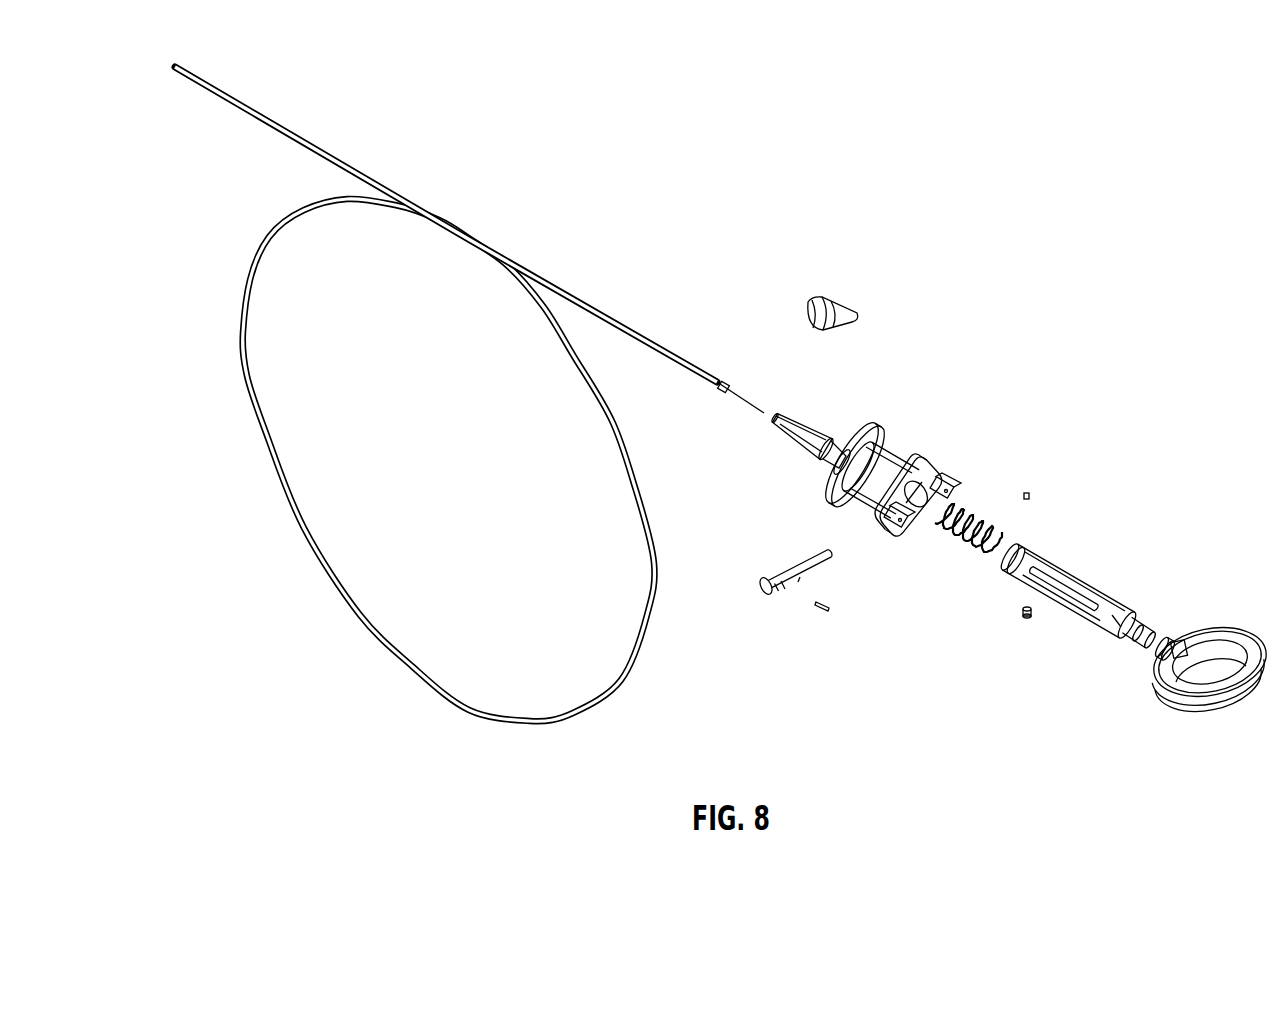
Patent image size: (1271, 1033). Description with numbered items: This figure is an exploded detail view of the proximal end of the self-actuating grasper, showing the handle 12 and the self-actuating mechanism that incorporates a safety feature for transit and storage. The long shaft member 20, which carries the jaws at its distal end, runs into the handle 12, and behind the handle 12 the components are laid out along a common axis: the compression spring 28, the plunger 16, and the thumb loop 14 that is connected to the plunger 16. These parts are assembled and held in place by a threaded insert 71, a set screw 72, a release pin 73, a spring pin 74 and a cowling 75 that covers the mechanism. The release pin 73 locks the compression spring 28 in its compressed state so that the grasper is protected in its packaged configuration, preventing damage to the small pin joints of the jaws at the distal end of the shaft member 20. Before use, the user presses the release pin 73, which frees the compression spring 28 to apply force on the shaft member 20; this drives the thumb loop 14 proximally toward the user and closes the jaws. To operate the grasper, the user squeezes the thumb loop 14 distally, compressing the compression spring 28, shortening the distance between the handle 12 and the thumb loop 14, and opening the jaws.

The handle 12 is at (885, 461).
The thumb loop 14 is at (1167, 628).
The plunger 16 is at (1089, 580).
The shaft member 20 is at (538, 281).
The compression spring 28 is at (962, 508).
The threaded insert 71 is at (1025, 620).
The set screw 72 is at (1029, 491).
The release pin 73 is at (761, 590).
The spring pin 74 is at (821, 612).
The cowling 75 is at (818, 296).